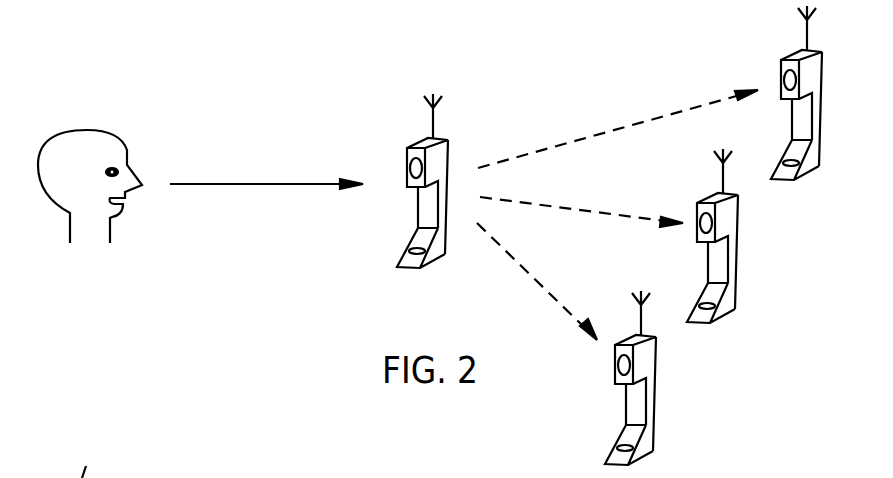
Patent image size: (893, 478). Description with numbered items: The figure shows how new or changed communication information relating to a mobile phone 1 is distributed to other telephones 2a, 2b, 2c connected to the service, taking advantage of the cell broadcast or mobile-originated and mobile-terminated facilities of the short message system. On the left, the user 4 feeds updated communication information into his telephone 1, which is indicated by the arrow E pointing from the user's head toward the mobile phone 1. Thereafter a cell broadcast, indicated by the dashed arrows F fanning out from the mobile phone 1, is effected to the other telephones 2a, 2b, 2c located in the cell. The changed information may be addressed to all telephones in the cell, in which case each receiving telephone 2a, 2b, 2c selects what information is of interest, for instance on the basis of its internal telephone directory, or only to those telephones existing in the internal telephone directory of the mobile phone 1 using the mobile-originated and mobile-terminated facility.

The user 4 is at (88, 128).
The mobile phone 1 is at (418, 210).
The telephone 2a is at (792, 121).
The telephone 2b is at (710, 270).
The telephone 2c is at (628, 407).
The arrow E is at (278, 183).
The arrows F is at (613, 130).